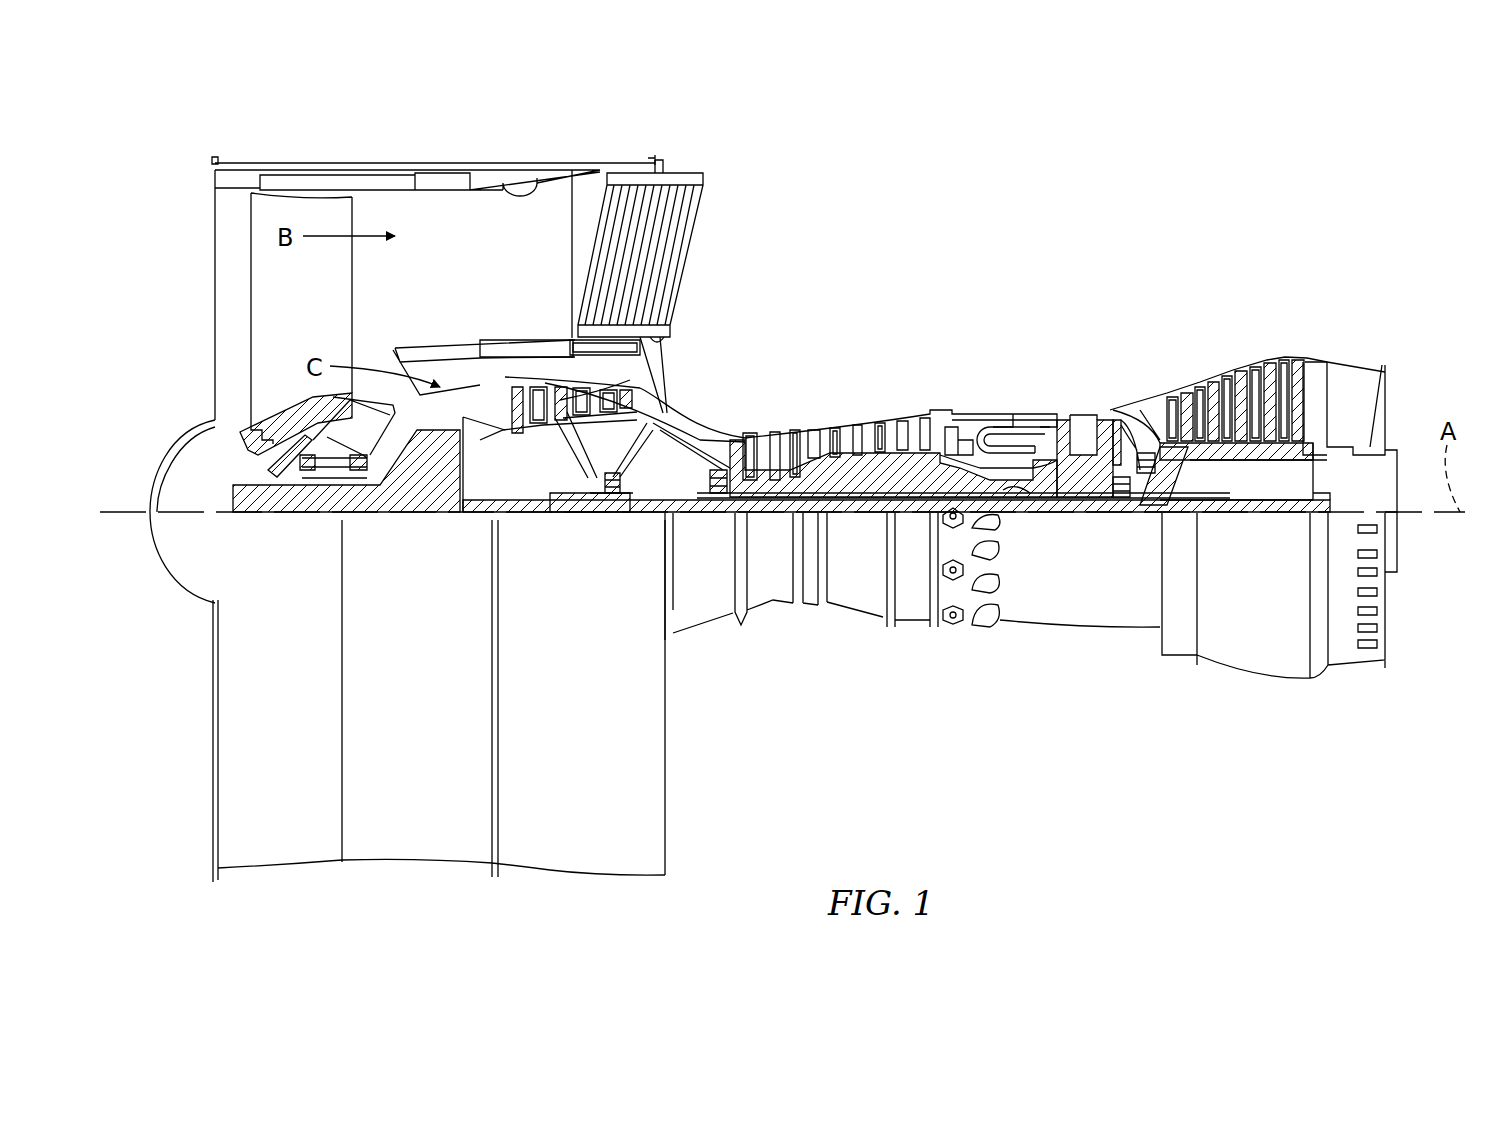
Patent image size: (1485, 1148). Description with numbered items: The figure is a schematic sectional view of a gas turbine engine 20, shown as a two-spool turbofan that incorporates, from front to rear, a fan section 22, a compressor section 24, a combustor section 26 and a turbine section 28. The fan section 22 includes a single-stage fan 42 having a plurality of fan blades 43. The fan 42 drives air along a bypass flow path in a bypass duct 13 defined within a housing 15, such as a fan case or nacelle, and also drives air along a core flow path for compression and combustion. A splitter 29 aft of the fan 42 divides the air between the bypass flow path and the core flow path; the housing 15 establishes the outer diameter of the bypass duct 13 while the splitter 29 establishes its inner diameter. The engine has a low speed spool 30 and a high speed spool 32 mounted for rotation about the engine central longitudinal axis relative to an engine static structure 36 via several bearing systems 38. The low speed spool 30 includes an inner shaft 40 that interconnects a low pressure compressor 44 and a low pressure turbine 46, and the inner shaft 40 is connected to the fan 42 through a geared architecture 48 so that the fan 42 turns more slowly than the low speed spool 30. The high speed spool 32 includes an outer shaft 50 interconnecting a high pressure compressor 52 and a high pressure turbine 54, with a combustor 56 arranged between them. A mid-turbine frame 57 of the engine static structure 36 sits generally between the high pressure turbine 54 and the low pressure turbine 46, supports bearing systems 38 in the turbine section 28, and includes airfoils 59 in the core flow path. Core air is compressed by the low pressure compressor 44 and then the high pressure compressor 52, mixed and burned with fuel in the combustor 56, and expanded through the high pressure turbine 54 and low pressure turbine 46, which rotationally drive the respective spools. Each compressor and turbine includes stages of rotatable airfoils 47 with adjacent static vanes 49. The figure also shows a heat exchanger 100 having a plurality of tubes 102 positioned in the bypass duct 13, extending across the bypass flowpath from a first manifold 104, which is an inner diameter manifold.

The bypass duct 13 is at (530, 172).
The housing 15 is at (445, 165).
The gas turbine engine 20 is at (1062, 258).
The fan section 22 is at (362, 157).
The compressor section 24 is at (718, 406).
The combustor section 26 is at (992, 395).
The turbine section 28 is at (1188, 348).
The splitter 29 is at (408, 343).
The low speed spool 30 is at (860, 522).
The high speed spool 32 is at (920, 470).
The engine static structure 36 is at (912, 623).
The bearing systems 38 is at (606, 497).
The inner shaft 40 is at (686, 522).
The fan 42 is at (310, 306).
The fan blades 43 is at (340, 313).
The low pressure compressor 44 is at (627, 397).
The low pressure turbine 46 is at (1240, 370).
The rotatable airfoils 47 is at (523, 388).
The geared architecture 48 is at (448, 490).
The static vanes 49 is at (540, 392).
The outer shaft 50 is at (1003, 490).
The high pressure compressor 52 is at (843, 425).
The high pressure turbine 54 is at (1085, 410).
The combustor 56 is at (1010, 435).
The mid-turbine frame 57 is at (1138, 397).
The airfoils 59 is at (1170, 455).
The heat exchanger 100 is at (714, 208).
The tubes 102 is at (673, 254).
The first manifold 104 is at (657, 333).